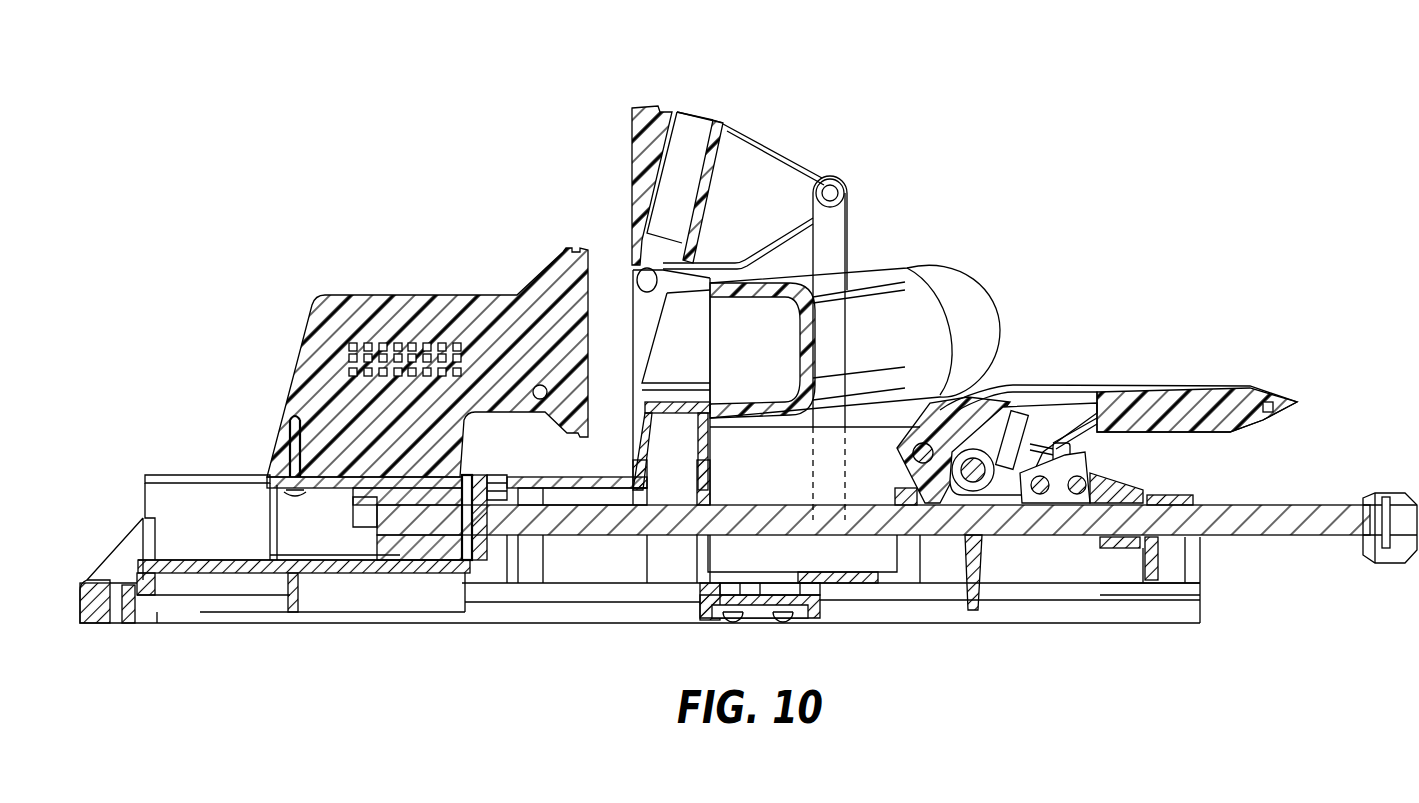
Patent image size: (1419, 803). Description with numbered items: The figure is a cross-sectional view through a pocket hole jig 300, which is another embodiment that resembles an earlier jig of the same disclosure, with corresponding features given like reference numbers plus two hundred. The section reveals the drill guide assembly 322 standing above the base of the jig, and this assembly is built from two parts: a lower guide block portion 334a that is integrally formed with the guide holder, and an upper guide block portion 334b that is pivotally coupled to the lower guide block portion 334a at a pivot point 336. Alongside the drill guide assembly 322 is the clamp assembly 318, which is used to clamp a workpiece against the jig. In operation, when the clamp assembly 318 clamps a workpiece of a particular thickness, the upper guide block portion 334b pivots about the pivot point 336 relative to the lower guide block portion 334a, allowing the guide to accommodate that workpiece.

The pocket hole jig 300 is at (314, 72).
The clamp assembly 318 is at (287, 282).
The drill guide assembly 322 is at (608, 120).
The lower guide block portion 334a is at (645, 297).
The upper guide block portion 334b is at (667, 107).
The pivot point 336 is at (637, 228).